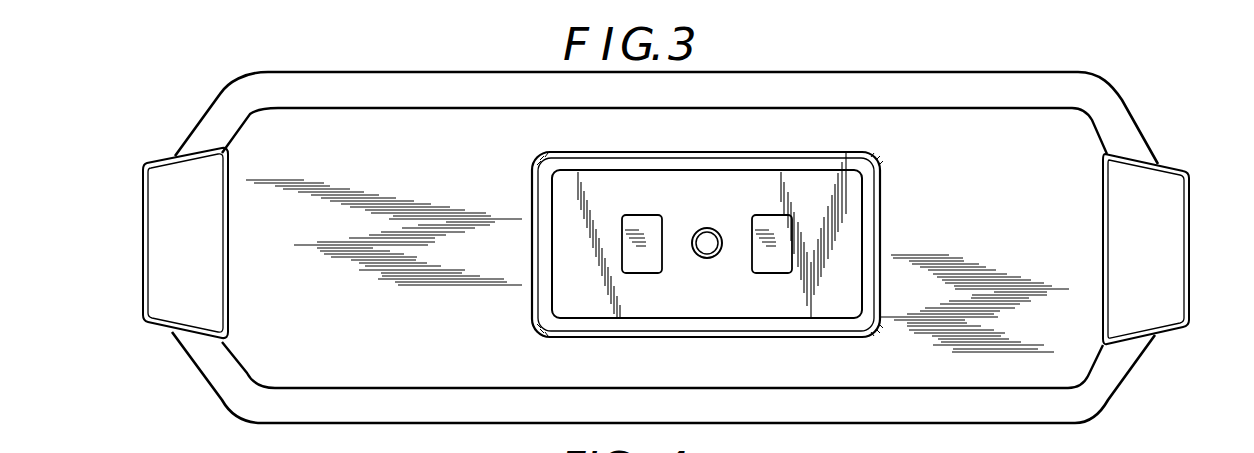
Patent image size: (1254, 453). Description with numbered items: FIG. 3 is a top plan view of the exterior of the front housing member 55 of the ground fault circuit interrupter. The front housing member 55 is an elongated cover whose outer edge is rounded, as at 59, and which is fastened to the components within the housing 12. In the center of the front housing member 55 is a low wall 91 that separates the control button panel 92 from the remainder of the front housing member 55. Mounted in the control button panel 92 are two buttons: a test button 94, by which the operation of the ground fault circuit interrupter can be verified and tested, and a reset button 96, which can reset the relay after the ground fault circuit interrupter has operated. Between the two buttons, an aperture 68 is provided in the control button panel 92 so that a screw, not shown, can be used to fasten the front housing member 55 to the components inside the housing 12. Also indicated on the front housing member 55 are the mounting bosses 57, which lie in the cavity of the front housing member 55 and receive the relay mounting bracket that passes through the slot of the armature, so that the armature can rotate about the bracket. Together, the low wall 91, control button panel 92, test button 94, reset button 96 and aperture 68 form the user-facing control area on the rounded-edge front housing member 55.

The housing 12 is at (330, 71).
The front housing member 55 is at (994, 72).
The mounting bosses 57 is at (936, 90).
The rounded outer edge 59 is at (1052, 415).
The low wall 91 is at (880, 222).
The control button panel 92 is at (830, 193).
The test button 94 is at (652, 240).
The reset button 96 is at (766, 264).
The aperture 68 is at (694, 258).